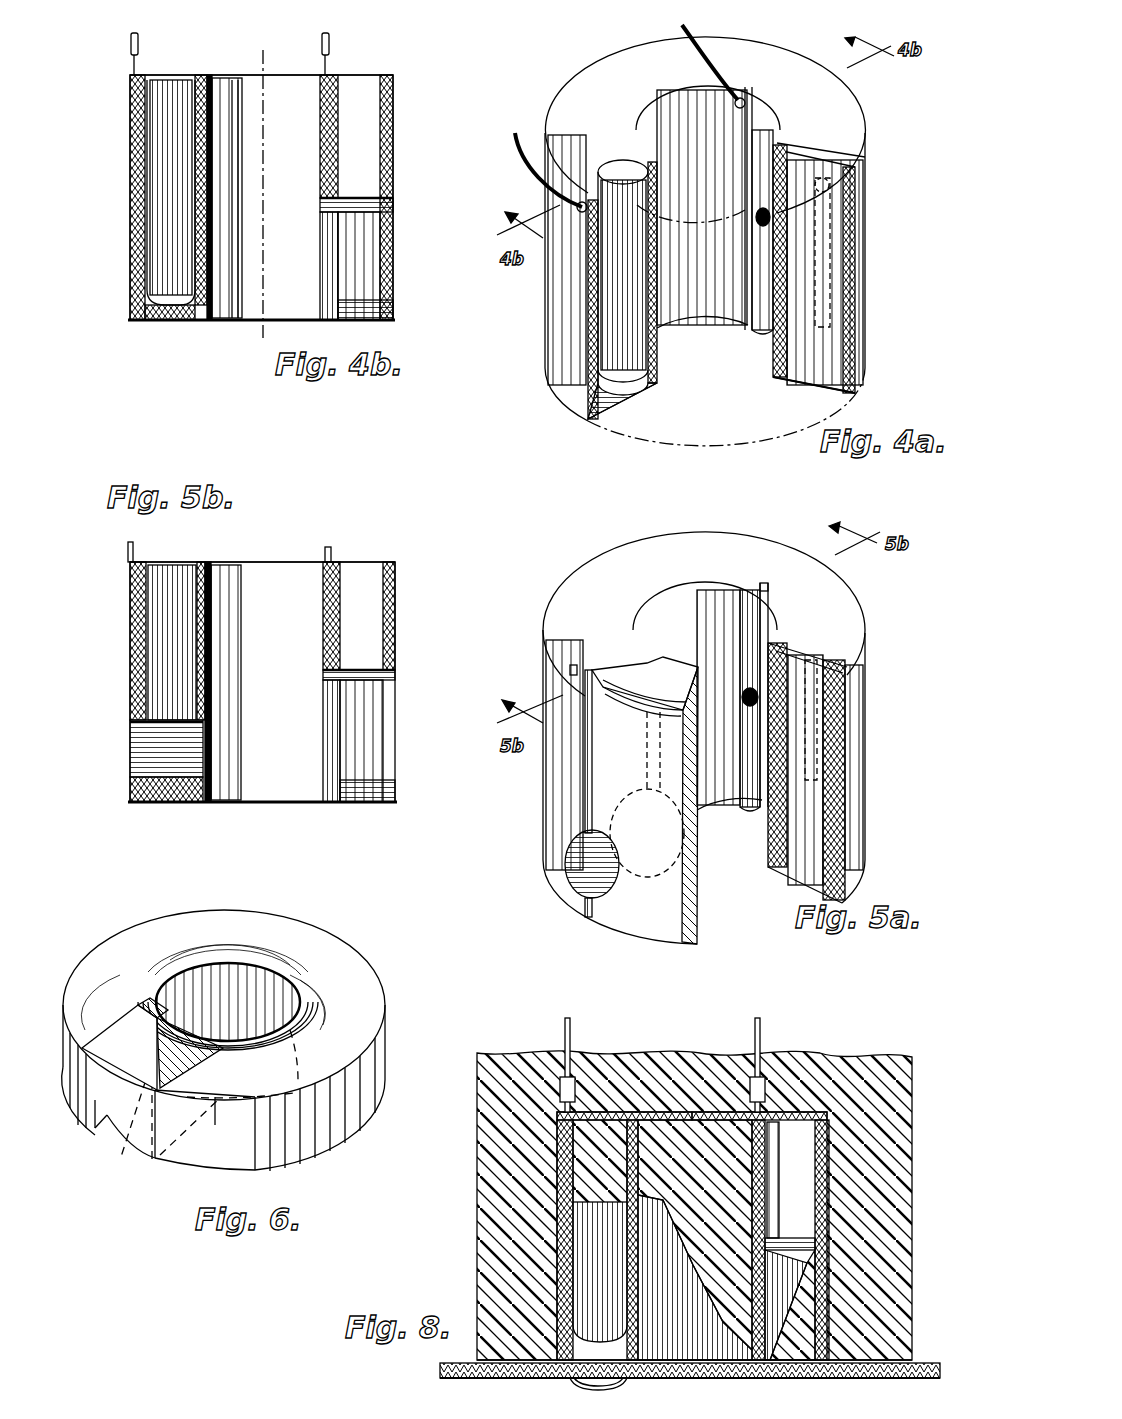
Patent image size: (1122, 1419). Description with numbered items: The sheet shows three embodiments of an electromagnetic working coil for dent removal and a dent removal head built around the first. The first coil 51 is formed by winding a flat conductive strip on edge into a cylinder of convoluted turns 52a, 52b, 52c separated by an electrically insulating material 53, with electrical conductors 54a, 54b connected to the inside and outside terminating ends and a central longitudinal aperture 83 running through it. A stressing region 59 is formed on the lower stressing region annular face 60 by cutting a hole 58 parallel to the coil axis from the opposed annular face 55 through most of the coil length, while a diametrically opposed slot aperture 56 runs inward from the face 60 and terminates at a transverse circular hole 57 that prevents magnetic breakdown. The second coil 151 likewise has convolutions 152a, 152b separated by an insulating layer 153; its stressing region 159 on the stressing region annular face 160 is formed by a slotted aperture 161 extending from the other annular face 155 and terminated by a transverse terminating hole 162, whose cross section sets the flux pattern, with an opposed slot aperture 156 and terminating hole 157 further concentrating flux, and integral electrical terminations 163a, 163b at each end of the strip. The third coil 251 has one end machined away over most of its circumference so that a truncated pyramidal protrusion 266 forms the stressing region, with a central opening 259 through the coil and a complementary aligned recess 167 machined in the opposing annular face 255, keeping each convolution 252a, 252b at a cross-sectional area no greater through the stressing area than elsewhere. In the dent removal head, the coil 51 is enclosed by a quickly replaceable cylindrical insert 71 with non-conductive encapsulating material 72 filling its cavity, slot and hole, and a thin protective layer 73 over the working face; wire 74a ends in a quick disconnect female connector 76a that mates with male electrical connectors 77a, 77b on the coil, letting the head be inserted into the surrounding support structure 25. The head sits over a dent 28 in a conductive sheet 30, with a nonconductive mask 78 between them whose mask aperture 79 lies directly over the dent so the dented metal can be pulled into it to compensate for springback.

In FIG. 4B, the electromagnetic working coil 51 is at (215, 283).
In FIG. 4A, the electromagnetic working coil 51 is at (870, 290).
In FIG. 4B, the convoluted turn 52a is at (393, 80).
In FIG. 4A, the convoluted turn 52a is at (870, 142).
In FIG. 4B, the convoluted turn 52b is at (382, 76).
In FIG. 4A, the convoluted turn 52b is at (862, 160).
In FIG. 4A, the convoluted turn 52c is at (840, 168).
In FIG. 4B, the electrically insulating material 53 is at (392, 76).
In FIG. 4A, the electrically insulating material 53 is at (872, 120).
In FIG. 4B, the electrical conductor 54a is at (130, 42).
In FIG. 4A, the electrical conductor 54a is at (514, 132).
In FIG. 4B, the electrical conductor 54b is at (332, 36).
In FIG. 4A, the electrical conductor 54b is at (680, 27).
In FIG. 4B, the annular face 55 is at (284, 72).
In FIG. 4A, the annular face 55 is at (785, 70).
In FIG. 4B, the slot aperture 56 is at (393, 284).
In FIG. 4A, the slot aperture 56 is at (770, 297).
In FIG. 4B, the transverse circular hole 57 is at (393, 206).
In FIG. 4A, the transverse circular hole 57 is at (757, 222).
In FIG. 4B, the hole 58 is at (165, 76).
In FIG. 4A, the hole 58 is at (618, 318).
In FIG. 4B, the stressing region 59 is at (150, 322).
In FIG. 4A, the stressing region 59 is at (614, 400).
In FIG. 4B, the stressing region annular face 60 is at (362, 322).
In FIG. 4A, the stressing region annular face 60 is at (800, 383).
In FIG. 4B, the central longitudinal aperture 83 is at (230, 76).
In FIG. 4A, the central longitudinal aperture 83 is at (664, 118).
In FIG. 5B, the electromagnetic working coil 151 is at (265, 782).
In FIG. 5A, the electromagnetic working coil 151 is at (860, 780).
In FIG. 5B, the convolution 152a is at (262, 641).
In FIG. 5A, the convolution 152a is at (868, 647).
In FIG. 5B, the convolution 152b is at (268, 641).
In FIG. 5A, the convolution 152b is at (858, 668).
In FIG. 5B, the insulating layer 153 is at (223, 682).
In FIG. 5A, the insulating layer 153 is at (865, 632).
In FIG. 5B, the annular face 155 is at (262, 562).
In FIG. 5A, the annular face 155 is at (720, 555).
In FIG. 5B, the slot aperture 156 is at (380, 742).
In FIG. 5A, the slot aperture 156 is at (755, 775).
In FIG. 5B, the terminating hole 157 is at (393, 680).
In FIG. 5A, the terminating hole 157 is at (746, 695).
In FIG. 5B, the stressing region 159 is at (155, 800).
In FIG. 5A, the stressing region 159 is at (583, 917).
In FIG. 5B, the stressing region annular face 160 is at (285, 802).
In FIG. 5A, the stressing region annular face 160 is at (625, 932).
In FIG. 5B, the slotted aperture 161 is at (130, 650).
In FIG. 5A, the slotted aperture 161 is at (590, 752).
In FIG. 5B, the terminating hole 162 is at (142, 745).
In FIG. 5A, the terminating hole 162 is at (565, 856).
In FIG. 5B, the electrical termination 163a is at (127, 548).
In FIG. 5A, the electrical termination 163a is at (570, 668).
In FIG. 5B, the electrical termination 163b is at (332, 550).
In FIG. 5A, the electrical termination 163b is at (770, 588).
In FIG. 6, the electromagnetic working coil 251 is at (386, 1063).
In FIG. 6, the convolution 252a is at (380, 972).
In FIG. 6, the convolution 252b is at (355, 972).
In FIG. 6, the opposing annular face 255 is at (315, 1150).
In FIG. 6, the central hole 259 is at (318, 945).
In FIG. 6, the truncated pyramidal protrusion 266 is at (130, 1015).
In FIG. 6, the hidden passage 167 is at (165, 1145).
In FIG. 8, the surrounding support structure 25 is at (477, 1238).
In FIG. 8, the dent 28 is at (582, 1387).
In FIG. 8, the conductive sheet 30 is at (440, 1375).
In FIG. 8, the cylindrical insert 71 is at (835, 1147).
In FIG. 8, the non-conductive encapsulating material 72 is at (695, 1348).
In FIG. 8, the protective layer 73 is at (790, 1372).
In FIG. 8, the wire 74a is at (572, 1026).
In FIG. 8, the quick disconnect female connector 76a is at (577, 1086).
In FIG. 8, the male electrical connector 77a is at (560, 1106).
In FIG. 8, the male electrical connector 77b is at (745, 1105).
In FIG. 8, the nonconductive mask 78 is at (462, 1363).
In FIG. 8, the mask aperture 79 is at (614, 1365).